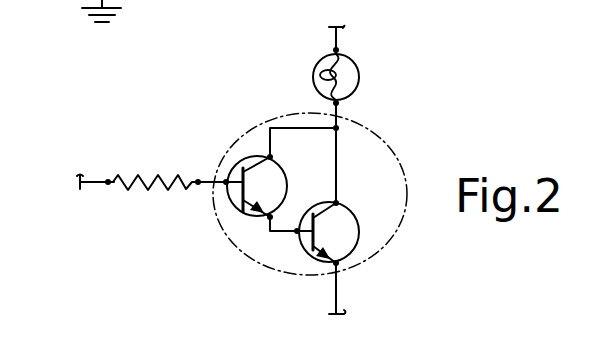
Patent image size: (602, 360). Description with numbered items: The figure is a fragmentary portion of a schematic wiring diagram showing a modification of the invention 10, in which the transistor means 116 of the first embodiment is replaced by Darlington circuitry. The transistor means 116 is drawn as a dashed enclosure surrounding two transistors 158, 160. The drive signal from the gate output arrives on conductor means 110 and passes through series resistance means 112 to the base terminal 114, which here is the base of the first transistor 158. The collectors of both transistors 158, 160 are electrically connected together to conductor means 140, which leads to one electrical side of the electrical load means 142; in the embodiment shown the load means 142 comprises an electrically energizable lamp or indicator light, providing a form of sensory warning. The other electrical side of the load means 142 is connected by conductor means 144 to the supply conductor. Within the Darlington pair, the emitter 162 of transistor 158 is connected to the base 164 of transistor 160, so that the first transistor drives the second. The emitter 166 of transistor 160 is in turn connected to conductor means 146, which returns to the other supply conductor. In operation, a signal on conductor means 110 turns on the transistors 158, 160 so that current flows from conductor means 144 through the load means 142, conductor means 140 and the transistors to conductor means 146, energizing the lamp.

The integrated circuit device 10 is at (240, 100).
The conductor means 110 is at (84, 179).
The series resistance means 112 is at (139, 176).
The base terminal 114 is at (228, 206).
The transistor means 116 is at (412, 148).
The conductor means 140 is at (340, 108).
The electrical load means 142 is at (372, 70).
The conductor means 144 is at (340, 40).
The conductor means 146 is at (338, 297).
The transistor 158 is at (308, 163).
The transistor 160 is at (370, 196).
The emitter 162 is at (266, 219).
The base 164 is at (138, 0).
The emitter 166 is at (318, 250).